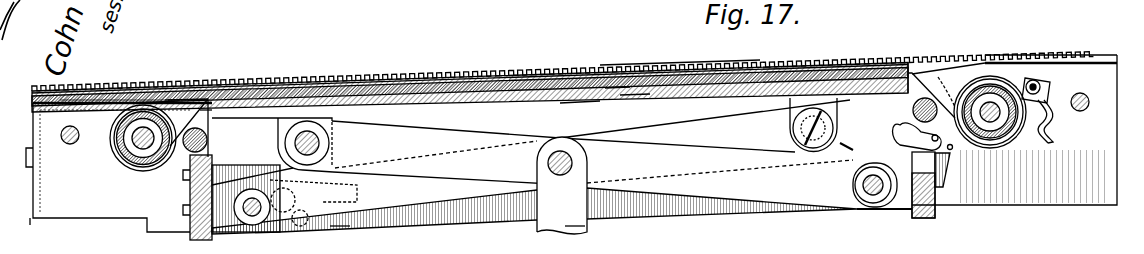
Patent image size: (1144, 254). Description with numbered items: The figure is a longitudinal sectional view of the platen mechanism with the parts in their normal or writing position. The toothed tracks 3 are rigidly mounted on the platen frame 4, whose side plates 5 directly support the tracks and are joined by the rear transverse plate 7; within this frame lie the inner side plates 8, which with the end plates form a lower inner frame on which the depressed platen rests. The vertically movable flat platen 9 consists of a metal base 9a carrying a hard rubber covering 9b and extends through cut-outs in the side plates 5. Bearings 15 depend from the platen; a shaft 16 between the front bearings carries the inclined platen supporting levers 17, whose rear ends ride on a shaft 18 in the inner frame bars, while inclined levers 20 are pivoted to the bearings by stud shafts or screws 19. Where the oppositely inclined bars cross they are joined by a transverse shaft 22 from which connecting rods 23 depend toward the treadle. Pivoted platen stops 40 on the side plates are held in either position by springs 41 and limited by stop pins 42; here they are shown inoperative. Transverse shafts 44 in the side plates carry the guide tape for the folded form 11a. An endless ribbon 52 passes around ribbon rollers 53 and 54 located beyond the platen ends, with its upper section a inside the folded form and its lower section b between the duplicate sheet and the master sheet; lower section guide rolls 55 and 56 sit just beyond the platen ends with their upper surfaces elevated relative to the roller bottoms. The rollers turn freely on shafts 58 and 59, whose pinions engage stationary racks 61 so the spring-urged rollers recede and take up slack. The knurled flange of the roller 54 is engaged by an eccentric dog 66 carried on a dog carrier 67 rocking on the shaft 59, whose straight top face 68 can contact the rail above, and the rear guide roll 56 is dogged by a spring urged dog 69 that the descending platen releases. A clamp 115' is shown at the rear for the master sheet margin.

The tracks or guides 3 is at (678, 70).
The platen frame 4 is at (1043, 203).
The side plates 5 is at (119, 210).
The rear transverse plate 7 is at (921, 219).
The inner side plates 8 is at (505, 221).
The platen 9 is at (578, 96).
The metal base 9a is at (632, 95).
The covering 9b is at (618, 90).
The folded form 11a is at (363, 82).
The bearings 15 is at (286, 128).
The shaft 16 is at (325, 143).
The platen supporting levers 17 is at (720, 180).
The shaft 18 is at (876, 196).
The stud shafts or screws 19 is at (795, 132).
The inclined levers 20 is at (591, 142).
The transverse shaft 22 is at (575, 162).
The connecting rods 23 is at (575, 226).
The platen stops 40 is at (362, 193).
The springs 41 is at (266, 228).
The stop pins 42 is at (341, 228).
The transverse shafts 44 is at (1104, 93).
The endless ribbon 52 is at (181, 96).
The ribbon roller 53 is at (133, 160).
The ribbon roller 54 is at (1005, 142).
The guide roll 55 is at (211, 141).
The guide roll 56 is at (913, 110).
The shaft 58 is at (132, 135).
The shaft 59 is at (992, 100).
The stationary racks 61 is at (111, 86).
The eccentric dog 66 is at (1040, 97).
The dog carrier 67 is at (1012, 78).
The straight top face 68 is at (1045, 80).
The spring urged dog 69 is at (896, 130).
The upper section of the ribbon a is at (172, 97).
The lower section of the ribbon b is at (206, 114).
The frame corner 115' is at (39, 231).